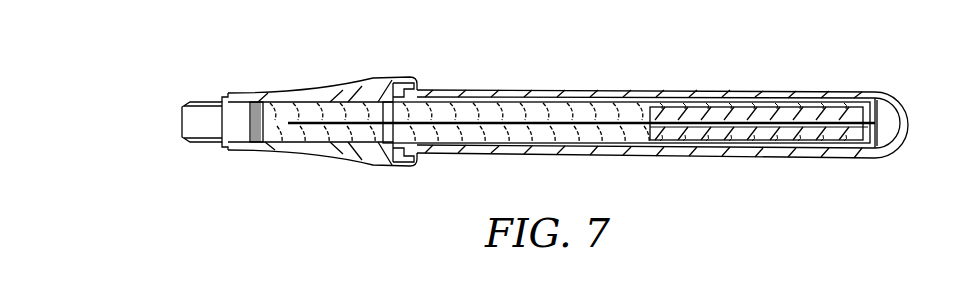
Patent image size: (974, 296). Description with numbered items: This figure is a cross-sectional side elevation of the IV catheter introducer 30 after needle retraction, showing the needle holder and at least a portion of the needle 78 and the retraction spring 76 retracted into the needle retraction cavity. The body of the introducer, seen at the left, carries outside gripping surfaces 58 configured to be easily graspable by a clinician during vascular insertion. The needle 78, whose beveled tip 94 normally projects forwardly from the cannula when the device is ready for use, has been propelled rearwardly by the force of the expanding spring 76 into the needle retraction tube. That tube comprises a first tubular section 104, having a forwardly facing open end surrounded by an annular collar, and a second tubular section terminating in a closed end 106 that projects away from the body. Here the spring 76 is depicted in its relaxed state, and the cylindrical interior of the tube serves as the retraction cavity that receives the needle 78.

The IV catheter introducer 30 is at (208, 44).
The outside gripping surfaces 58 is at (308, 147).
The beveled tip 94 is at (289, 121).
The spring 76 is at (587, 110).
The needle 78 is at (437, 126).
The first tubular section 104 is at (540, 150).
The closed end 106 is at (902, 123).